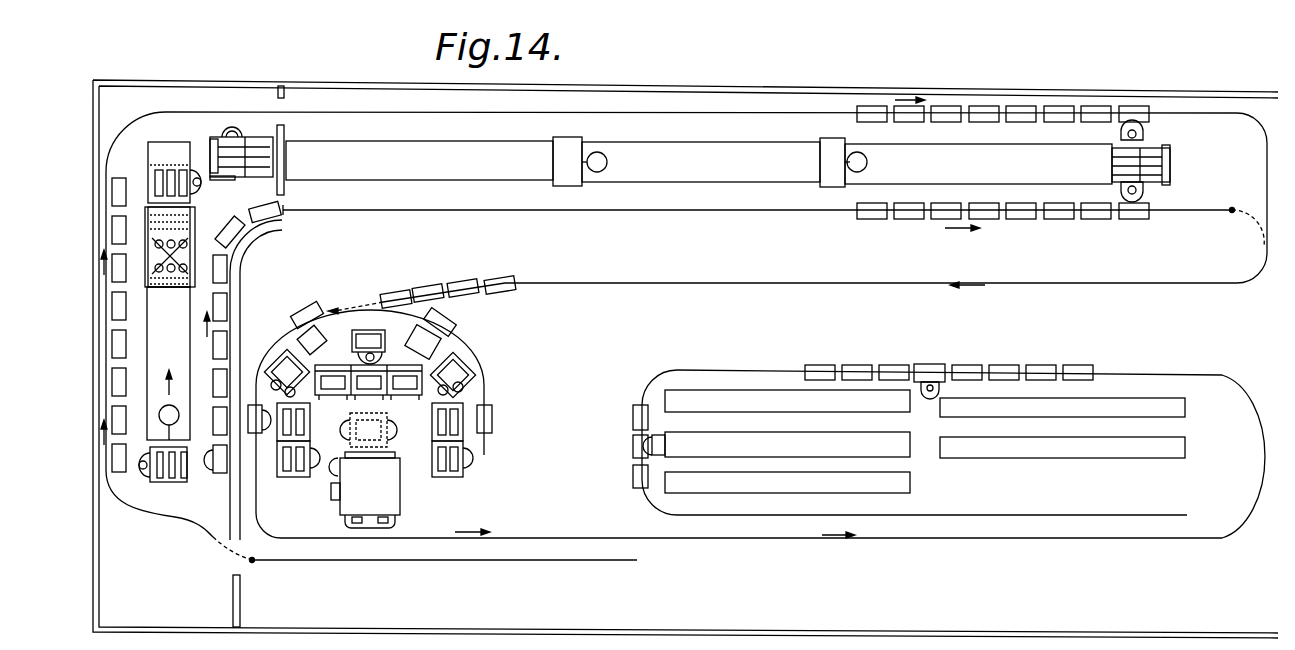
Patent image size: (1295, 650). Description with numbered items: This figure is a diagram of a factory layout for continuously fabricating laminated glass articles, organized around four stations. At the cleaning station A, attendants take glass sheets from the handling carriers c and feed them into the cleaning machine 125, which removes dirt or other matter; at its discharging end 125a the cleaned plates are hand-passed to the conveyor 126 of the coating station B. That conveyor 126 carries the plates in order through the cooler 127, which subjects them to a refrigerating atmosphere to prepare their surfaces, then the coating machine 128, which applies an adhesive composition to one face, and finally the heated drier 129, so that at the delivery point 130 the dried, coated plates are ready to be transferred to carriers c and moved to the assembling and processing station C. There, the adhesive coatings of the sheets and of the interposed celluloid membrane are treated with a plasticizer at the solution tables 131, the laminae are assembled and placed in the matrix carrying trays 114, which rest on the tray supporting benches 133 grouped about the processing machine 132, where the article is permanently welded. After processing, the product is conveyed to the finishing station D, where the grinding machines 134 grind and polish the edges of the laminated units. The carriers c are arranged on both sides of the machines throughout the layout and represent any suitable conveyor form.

The cleaning machine 125 is at (164, 384).
The discharging end of the cleaning machine 125a is at (173, 200).
The conveyor 126 is at (240, 155).
The cooler 127 is at (446, 161).
The coating machine 128 is at (724, 162).
The drier 129 is at (978, 164).
The delivery point 130 is at (1150, 158).
The solution tables 131 is at (372, 332).
The matrix carrying trays 114 is at (378, 386).
The tray supporting benches 133 is at (278, 462).
The processing machine 132 is at (396, 497).
The grinding machines 134 is at (720, 438).
The handling carriers c is at (125, 192).
The cleaning station A is at (160, 336).
The coating station B is at (1002, 75).
The assembling and processing station C is at (406, 415).
The finishing station D is at (932, 349).